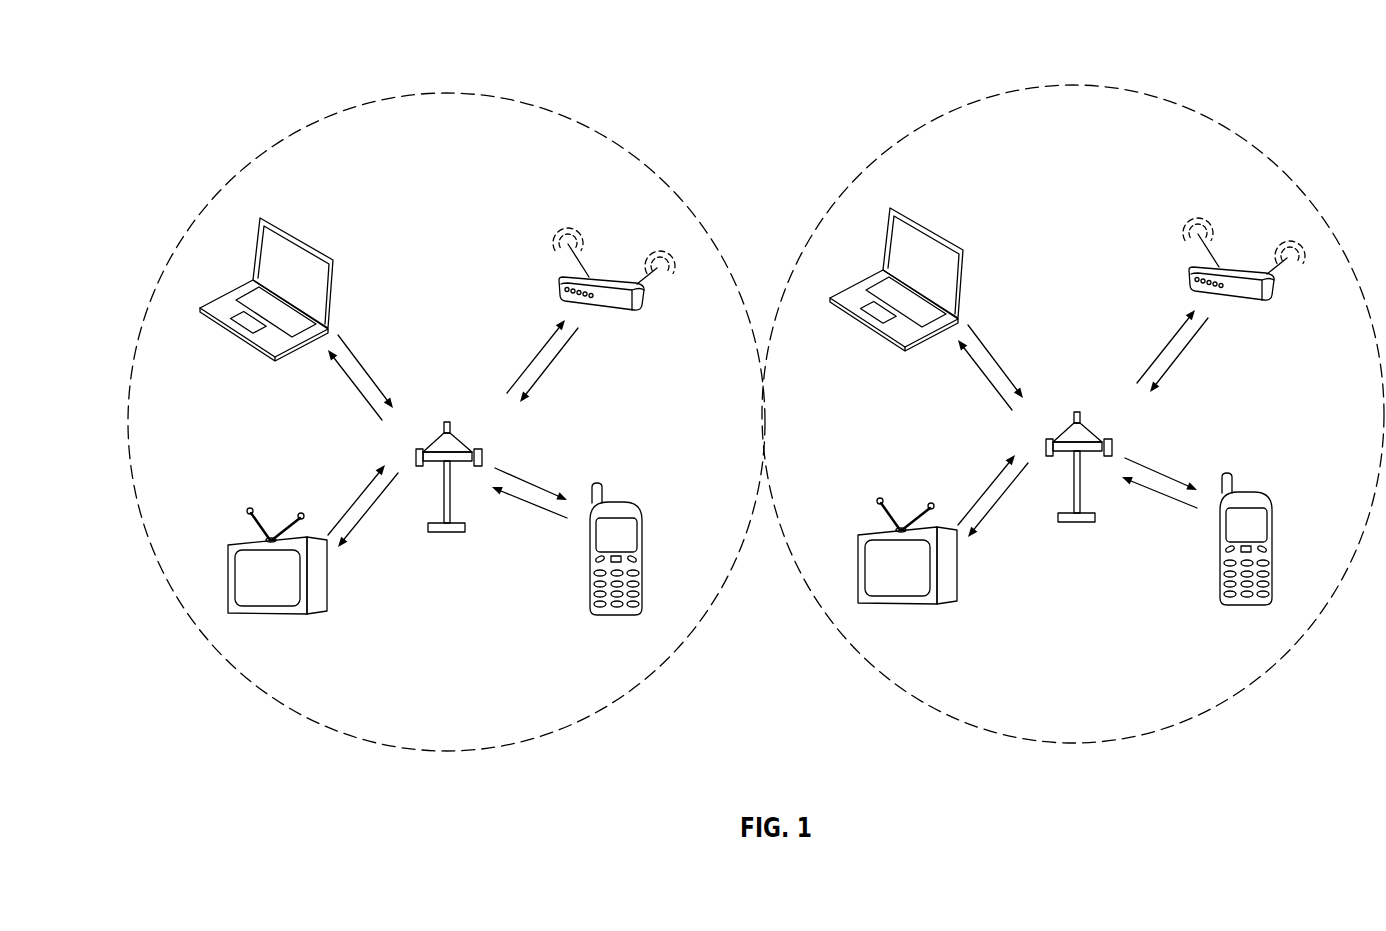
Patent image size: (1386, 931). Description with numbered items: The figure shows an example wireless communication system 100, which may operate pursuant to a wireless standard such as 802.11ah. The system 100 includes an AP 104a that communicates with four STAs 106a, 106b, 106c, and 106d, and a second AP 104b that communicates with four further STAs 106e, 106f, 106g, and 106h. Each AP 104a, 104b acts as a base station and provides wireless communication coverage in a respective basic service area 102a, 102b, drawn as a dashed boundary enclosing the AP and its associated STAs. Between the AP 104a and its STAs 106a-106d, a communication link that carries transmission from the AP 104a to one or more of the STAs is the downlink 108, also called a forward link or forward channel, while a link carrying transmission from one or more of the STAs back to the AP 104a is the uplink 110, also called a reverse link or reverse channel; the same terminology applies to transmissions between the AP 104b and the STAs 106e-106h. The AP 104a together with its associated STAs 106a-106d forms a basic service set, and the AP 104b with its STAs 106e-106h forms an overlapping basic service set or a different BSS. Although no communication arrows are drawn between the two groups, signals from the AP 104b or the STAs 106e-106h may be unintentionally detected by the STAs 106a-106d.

The wireless communication system 100 is at (231, 78).
The basic service area 102a is at (453, 93).
The basic service area 102b is at (1083, 85).
The AP 104a is at (447, 421).
The AP 104b is at (1095, 457).
The STA 106a is at (615, 502).
The STA 106b is at (250, 543).
The STA 106c is at (241, 282).
The STA 106d is at (598, 277).
The STA 106e is at (1268, 537).
The STA 106f is at (882, 551).
The STA 106g is at (881, 279).
The STA 106h is at (1253, 259).
The downlink 108 is at (533, 484).
The uplink 110 is at (547, 511).